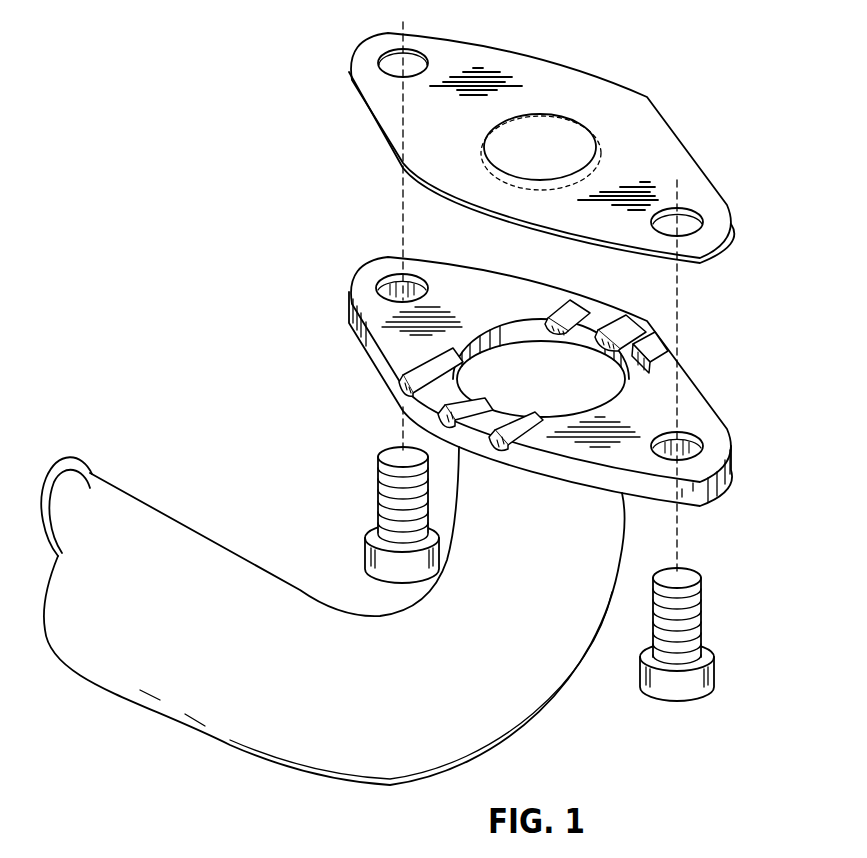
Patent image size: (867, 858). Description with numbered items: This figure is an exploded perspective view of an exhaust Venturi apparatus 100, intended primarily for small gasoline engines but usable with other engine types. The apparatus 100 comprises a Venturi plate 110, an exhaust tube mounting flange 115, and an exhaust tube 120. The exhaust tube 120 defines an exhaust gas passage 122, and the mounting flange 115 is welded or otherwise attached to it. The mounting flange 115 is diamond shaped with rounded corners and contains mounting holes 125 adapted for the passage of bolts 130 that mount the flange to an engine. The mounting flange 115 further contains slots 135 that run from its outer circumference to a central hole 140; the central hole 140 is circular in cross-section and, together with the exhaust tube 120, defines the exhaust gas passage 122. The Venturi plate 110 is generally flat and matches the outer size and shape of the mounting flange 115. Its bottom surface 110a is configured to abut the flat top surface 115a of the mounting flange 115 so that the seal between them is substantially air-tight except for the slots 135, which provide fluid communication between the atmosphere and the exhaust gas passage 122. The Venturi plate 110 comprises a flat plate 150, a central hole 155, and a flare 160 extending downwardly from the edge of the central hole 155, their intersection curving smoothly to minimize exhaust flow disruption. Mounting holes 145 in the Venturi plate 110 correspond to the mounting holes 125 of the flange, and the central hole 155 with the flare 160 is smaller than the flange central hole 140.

The exhaust Venturi apparatus 100 is at (181, 133).
The Venturi plate 110 is at (544, 147).
The bottom surface of Venturi plate 110a is at (573, 212).
The exhaust tube mounting flange 115 is at (547, 377).
The flat top surface of mounting flange 115a is at (653, 417).
The exhaust tube 120 is at (332, 639).
The exhaust gas passage 122 is at (270, 685).
The mounting holes 125 is at (392, 277).
The bolts 130 is at (379, 490).
The slots 135 is at (445, 428).
The central hole of mounting flange 140 is at (525, 365).
The mounting holes of Venturi plate 145 is at (390, 62).
The flat plate 150 is at (598, 88).
The central hole of Venturi plate 155 is at (560, 133).
The flare 160 is at (522, 182).